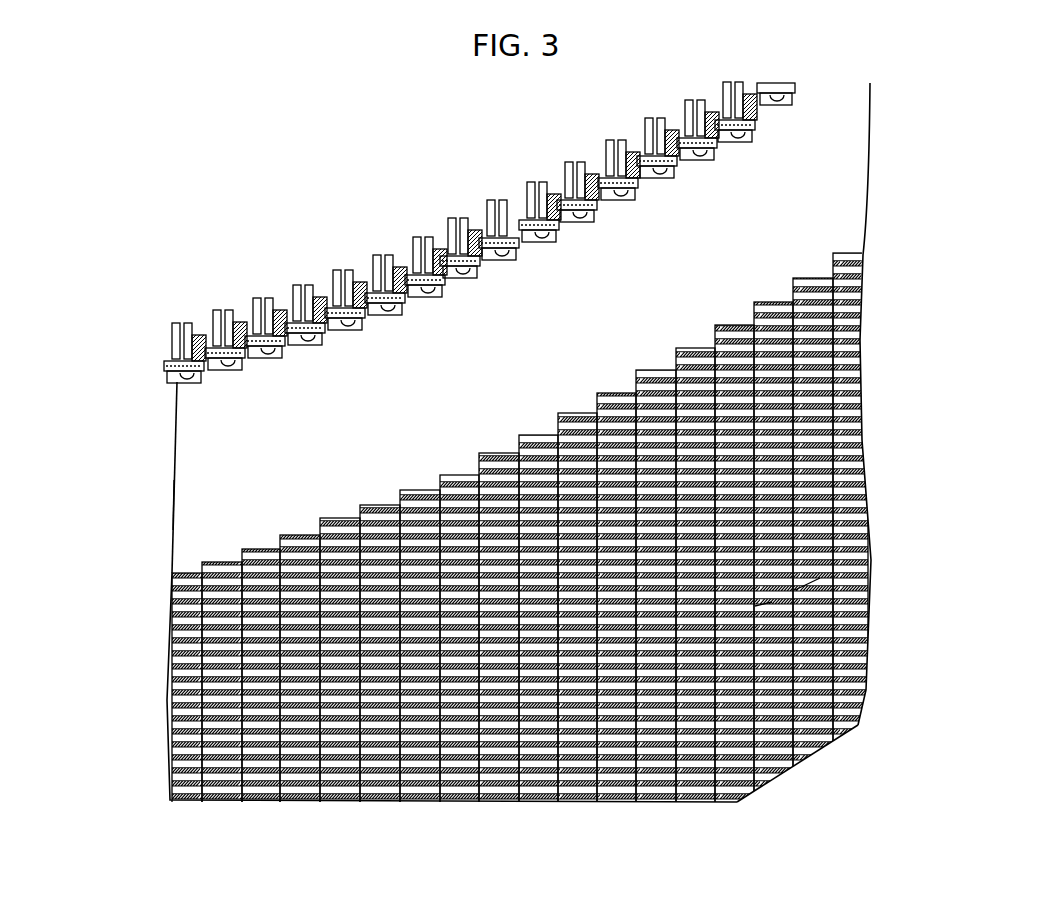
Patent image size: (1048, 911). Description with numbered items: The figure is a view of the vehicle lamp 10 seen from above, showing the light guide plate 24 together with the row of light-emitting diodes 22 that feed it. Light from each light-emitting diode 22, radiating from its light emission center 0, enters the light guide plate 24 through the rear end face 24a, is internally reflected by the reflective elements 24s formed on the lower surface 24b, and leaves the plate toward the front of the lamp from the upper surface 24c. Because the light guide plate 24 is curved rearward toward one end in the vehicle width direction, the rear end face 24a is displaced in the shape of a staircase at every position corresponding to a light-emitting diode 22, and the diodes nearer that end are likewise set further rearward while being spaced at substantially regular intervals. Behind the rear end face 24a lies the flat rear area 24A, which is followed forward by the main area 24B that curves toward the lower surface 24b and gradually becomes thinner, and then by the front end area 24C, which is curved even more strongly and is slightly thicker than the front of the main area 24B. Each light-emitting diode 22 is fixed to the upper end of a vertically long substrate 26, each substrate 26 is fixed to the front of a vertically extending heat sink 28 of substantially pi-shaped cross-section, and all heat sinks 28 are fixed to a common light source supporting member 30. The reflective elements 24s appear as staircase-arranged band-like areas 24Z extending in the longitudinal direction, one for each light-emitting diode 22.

The vehicle lamp 10 is at (216, 192).
The light-emitting diode 22 is at (538, 254).
The light guide plate 24 is at (868, 330).
The rear end face 24a is at (212, 320).
The rear area 24A is at (820, 190).
The lower surface 24b is at (205, 460).
The main area 24B is at (820, 494).
The upper surface 24c is at (205, 526).
The front end area 24C is at (818, 715).
The reflective element 24s is at (165, 740).
The band-like area 24Z is at (872, 612).
The substrate 26 is at (556, 214).
The heat sink 28 is at (568, 178).
The light source supporting member 30 is at (406, 255).
The light emission center 0 is at (458, 272).